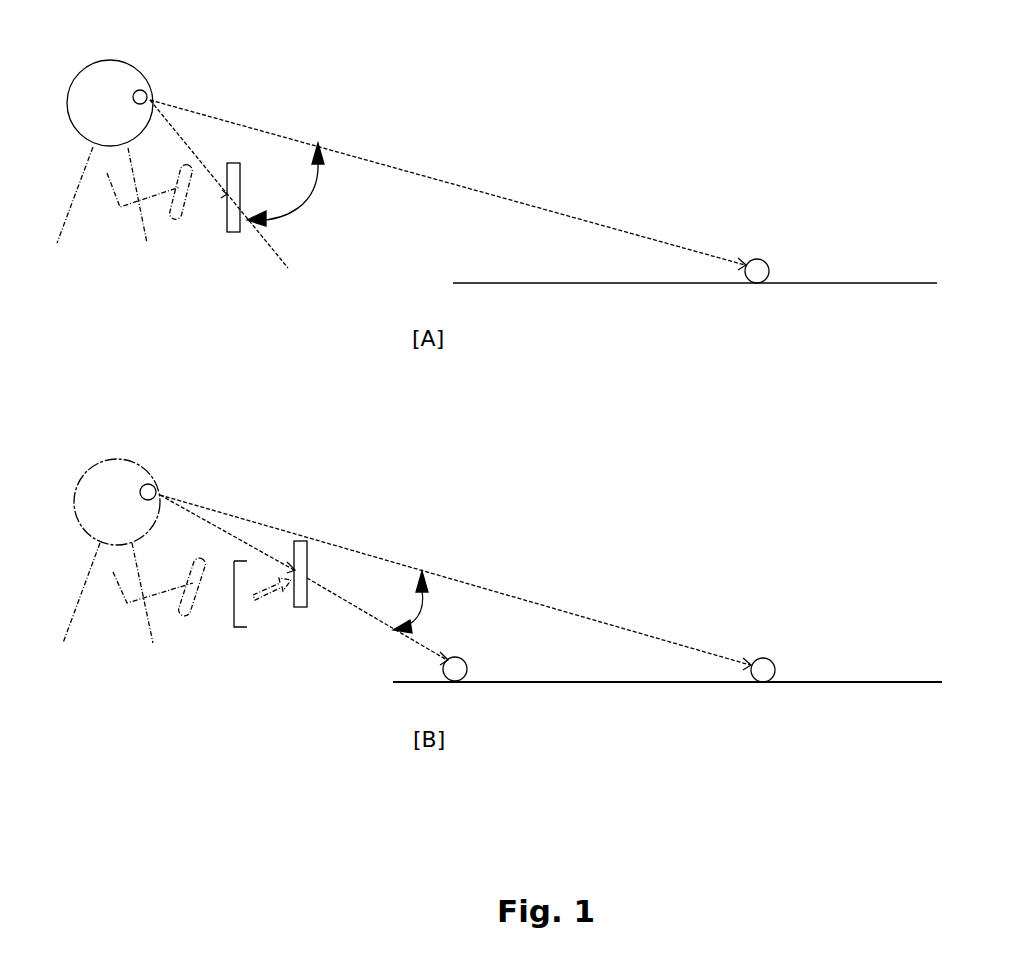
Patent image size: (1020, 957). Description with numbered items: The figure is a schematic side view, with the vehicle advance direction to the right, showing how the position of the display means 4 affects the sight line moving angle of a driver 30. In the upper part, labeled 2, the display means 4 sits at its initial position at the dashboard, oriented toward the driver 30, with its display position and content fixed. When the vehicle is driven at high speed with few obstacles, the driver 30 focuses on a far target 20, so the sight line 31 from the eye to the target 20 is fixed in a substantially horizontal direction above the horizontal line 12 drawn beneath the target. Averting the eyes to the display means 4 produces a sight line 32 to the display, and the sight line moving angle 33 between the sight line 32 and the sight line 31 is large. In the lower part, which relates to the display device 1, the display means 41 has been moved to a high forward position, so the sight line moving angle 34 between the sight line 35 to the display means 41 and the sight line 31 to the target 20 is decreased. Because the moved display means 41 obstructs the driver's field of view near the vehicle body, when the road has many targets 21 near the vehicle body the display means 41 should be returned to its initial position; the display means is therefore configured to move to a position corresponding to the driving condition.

The display device 1 is at (598, 462).
The direct viewing state 2 is at (598, 82).
The display means 4 is at (234, 222).
The ground 12 is at (875, 283).
The target 20 is at (762, 257).
The targets 21 is at (455, 666).
The driver 30 is at (112, 74).
The sight line 31 is at (290, 137).
The sight line 32 is at (207, 177).
The sight line moving angle 33 is at (330, 172).
The sight line moving angle 34 is at (430, 591).
The sight line 35 is at (362, 607).
The display means after movement 41 is at (300, 592).